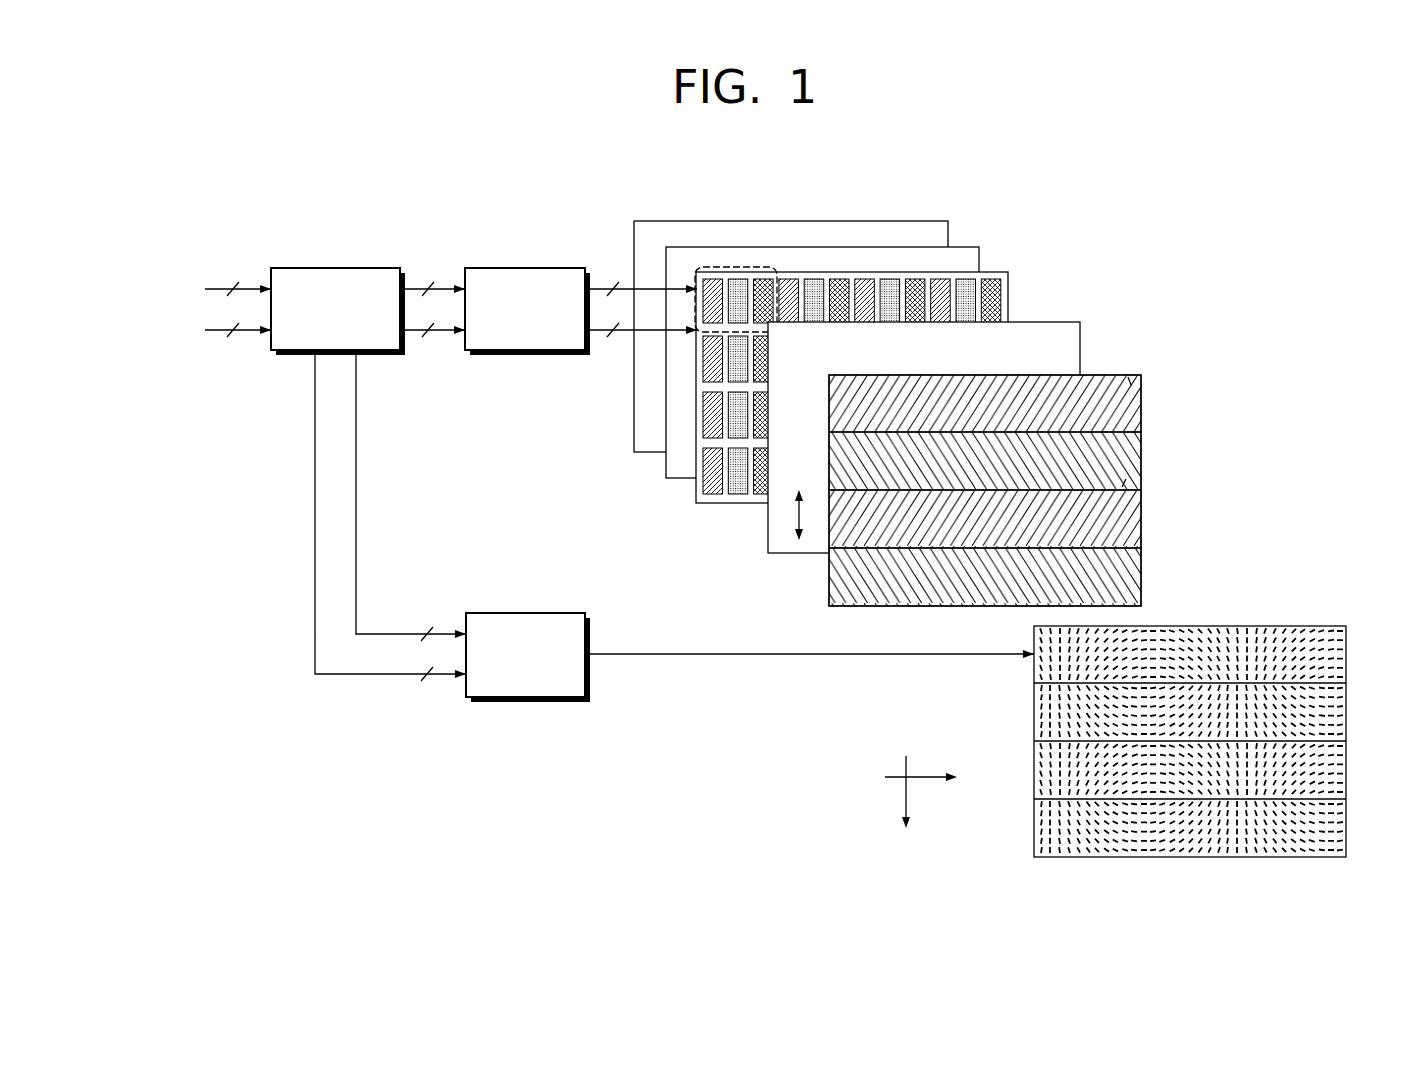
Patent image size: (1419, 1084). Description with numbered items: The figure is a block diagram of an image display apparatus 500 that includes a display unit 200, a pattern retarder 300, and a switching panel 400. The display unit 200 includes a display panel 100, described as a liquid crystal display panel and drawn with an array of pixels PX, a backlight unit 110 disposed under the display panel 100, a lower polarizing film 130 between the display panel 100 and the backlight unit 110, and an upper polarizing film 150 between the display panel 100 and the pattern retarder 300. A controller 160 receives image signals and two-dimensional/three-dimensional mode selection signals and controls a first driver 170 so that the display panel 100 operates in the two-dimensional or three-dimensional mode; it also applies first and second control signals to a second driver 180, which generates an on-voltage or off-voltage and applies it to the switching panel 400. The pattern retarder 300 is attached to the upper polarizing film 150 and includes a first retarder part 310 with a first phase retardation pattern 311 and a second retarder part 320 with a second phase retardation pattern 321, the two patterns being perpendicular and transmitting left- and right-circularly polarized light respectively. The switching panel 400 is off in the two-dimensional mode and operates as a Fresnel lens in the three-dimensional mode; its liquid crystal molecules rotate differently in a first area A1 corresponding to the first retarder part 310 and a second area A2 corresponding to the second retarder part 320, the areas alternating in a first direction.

The display panel 100 is at (864, 358).
The backlight unit 110 is at (932, 221).
The lower polarizing film 130 is at (962, 247).
The upper polarizing film 150 is at (1045, 322).
The controller 160 is at (353, 267).
The first driver 170 is at (543, 267).
The second driver 180 is at (543, 612).
The display unit 200 is at (864, 326).
The pattern retarder 300 is at (1024, 457).
The first retarder part 310 is at (1147, 377).
The first phase retardation pattern 311 is at (1131, 385).
The second retarder part 320 is at (1147, 434).
The second phase retardation pattern 321 is at (1122, 487).
The switching panel 400 is at (1212, 708).
The image display apparatus 500 is at (1216, 208).
The pixel PX is at (745, 267).
The first area A1 is at (1352, 628).
The second area A2 is at (1352, 684).